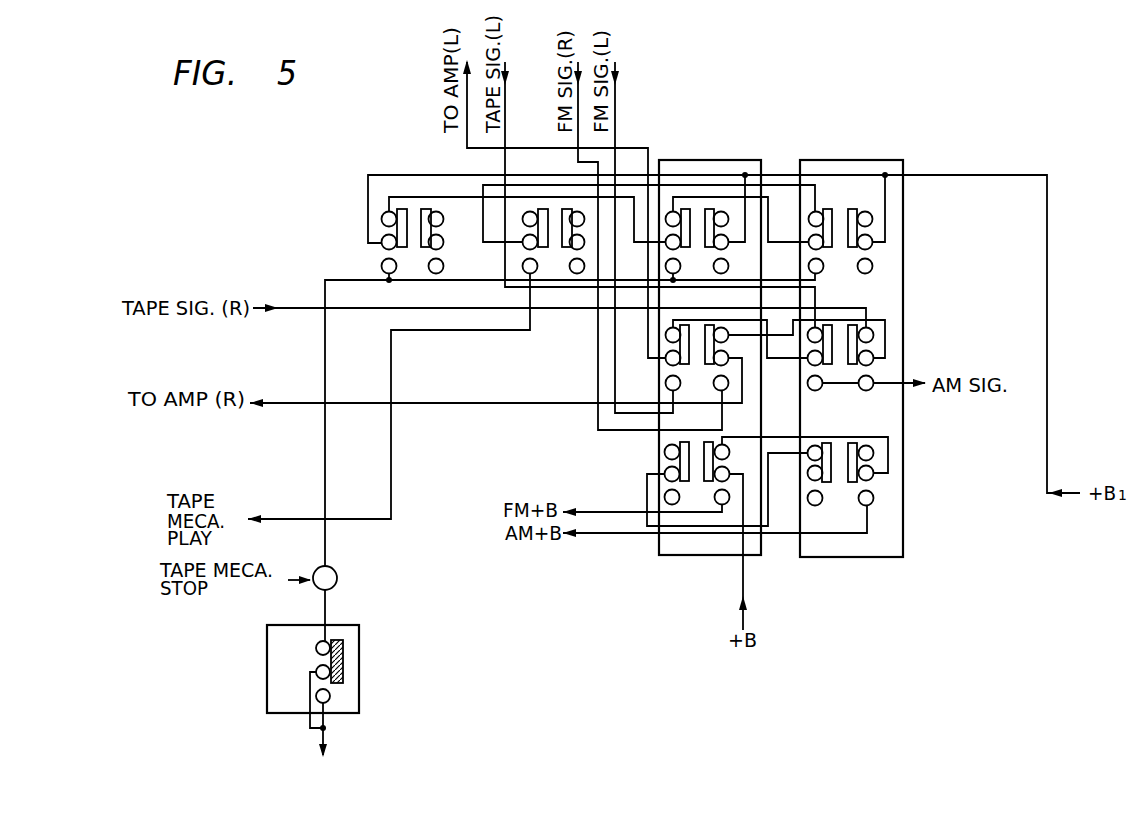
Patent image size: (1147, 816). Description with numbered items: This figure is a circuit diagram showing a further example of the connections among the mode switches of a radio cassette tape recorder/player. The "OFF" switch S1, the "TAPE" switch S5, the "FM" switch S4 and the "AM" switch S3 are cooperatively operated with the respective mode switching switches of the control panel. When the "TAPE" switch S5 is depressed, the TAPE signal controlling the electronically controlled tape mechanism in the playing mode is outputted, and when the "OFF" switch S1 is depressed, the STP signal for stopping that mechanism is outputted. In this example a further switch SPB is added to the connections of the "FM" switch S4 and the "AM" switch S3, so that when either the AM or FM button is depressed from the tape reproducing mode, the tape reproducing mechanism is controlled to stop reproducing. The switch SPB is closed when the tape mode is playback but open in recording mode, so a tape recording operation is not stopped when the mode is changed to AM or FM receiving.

The "OFF" switch S1 is at (361, 246).
The "TAPE" switch S5 is at (486, 254).
The "FM" switch S4 is at (755, 160).
The "AM" switch S3 is at (870, 160).
The switch SPB is at (361, 658).